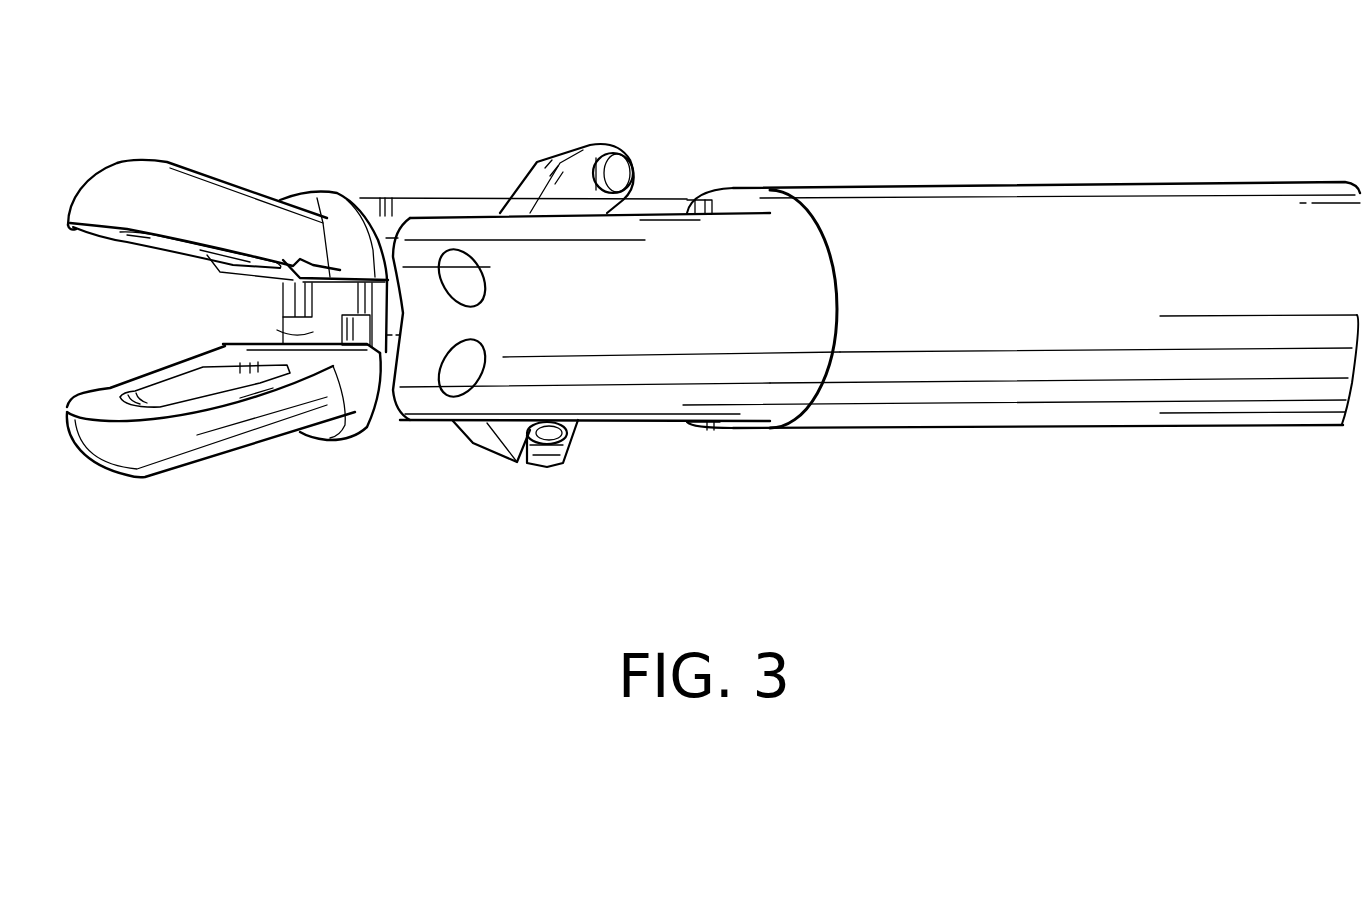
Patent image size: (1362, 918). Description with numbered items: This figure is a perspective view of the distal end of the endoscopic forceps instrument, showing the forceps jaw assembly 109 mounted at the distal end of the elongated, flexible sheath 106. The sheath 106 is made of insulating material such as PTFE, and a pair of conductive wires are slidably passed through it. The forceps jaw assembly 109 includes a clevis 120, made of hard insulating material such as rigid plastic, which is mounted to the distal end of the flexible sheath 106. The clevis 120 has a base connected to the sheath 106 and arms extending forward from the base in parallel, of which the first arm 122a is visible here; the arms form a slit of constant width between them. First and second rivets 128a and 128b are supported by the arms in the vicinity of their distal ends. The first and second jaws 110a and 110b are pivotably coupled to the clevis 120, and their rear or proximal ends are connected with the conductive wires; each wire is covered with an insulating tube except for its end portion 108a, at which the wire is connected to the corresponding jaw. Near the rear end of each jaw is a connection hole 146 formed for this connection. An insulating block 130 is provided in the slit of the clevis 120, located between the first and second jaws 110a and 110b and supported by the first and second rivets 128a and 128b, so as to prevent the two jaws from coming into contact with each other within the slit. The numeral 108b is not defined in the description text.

The flexible sheath 106 is at (1141, 208).
The end portion of conductive wire 108a is at (567, 465).
The upper mounting lug 108b is at (583, 212).
The forceps jaw assembly 109 is at (665, 80).
The first jaw 110a is at (173, 442).
The second jaw 110b is at (166, 186).
The clevis 120 is at (711, 386).
The first arm 122a is at (620, 373).
The first rivet 128a is at (455, 373).
The second rivet 128b is at (462, 277).
The insulating block 130 is at (277, 330).
The connection hole 146 is at (578, 195).